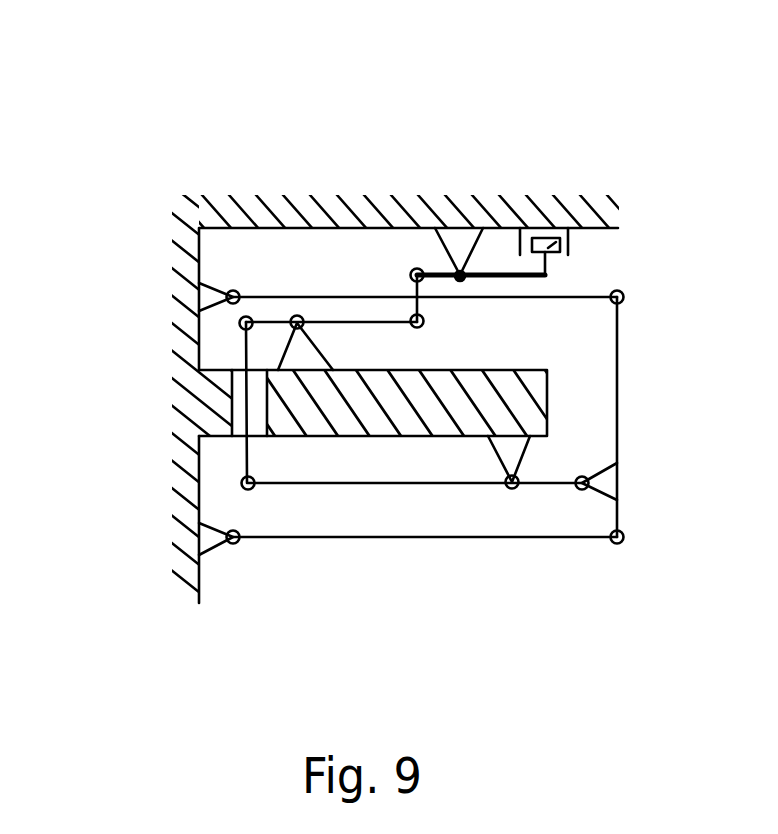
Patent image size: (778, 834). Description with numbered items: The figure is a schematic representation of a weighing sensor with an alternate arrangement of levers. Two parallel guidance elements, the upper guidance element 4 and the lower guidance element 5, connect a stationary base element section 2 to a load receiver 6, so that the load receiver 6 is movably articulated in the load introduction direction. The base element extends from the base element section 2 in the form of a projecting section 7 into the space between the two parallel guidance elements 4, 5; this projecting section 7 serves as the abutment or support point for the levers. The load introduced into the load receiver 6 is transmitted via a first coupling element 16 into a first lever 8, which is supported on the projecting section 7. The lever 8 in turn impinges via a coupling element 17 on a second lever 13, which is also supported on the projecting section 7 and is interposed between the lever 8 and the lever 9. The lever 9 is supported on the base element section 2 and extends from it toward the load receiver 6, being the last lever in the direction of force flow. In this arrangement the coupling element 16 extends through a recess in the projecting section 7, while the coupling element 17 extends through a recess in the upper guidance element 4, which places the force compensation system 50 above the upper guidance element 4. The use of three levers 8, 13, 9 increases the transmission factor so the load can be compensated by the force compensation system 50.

The base element section 2 is at (170, 393).
The upper guidance element 4 is at (577, 297).
The parallel guidance element 5 is at (338, 542).
The load receiver 6 is at (622, 412).
The projecting section 7 is at (500, 422).
The first lever 8 is at (427, 478).
The additional lever 9 is at (487, 273).
The second lever 13 is at (350, 322).
The coupling element 16 is at (252, 452).
The coupling element 17 is at (423, 311).
The force compensation system 50 is at (567, 228).